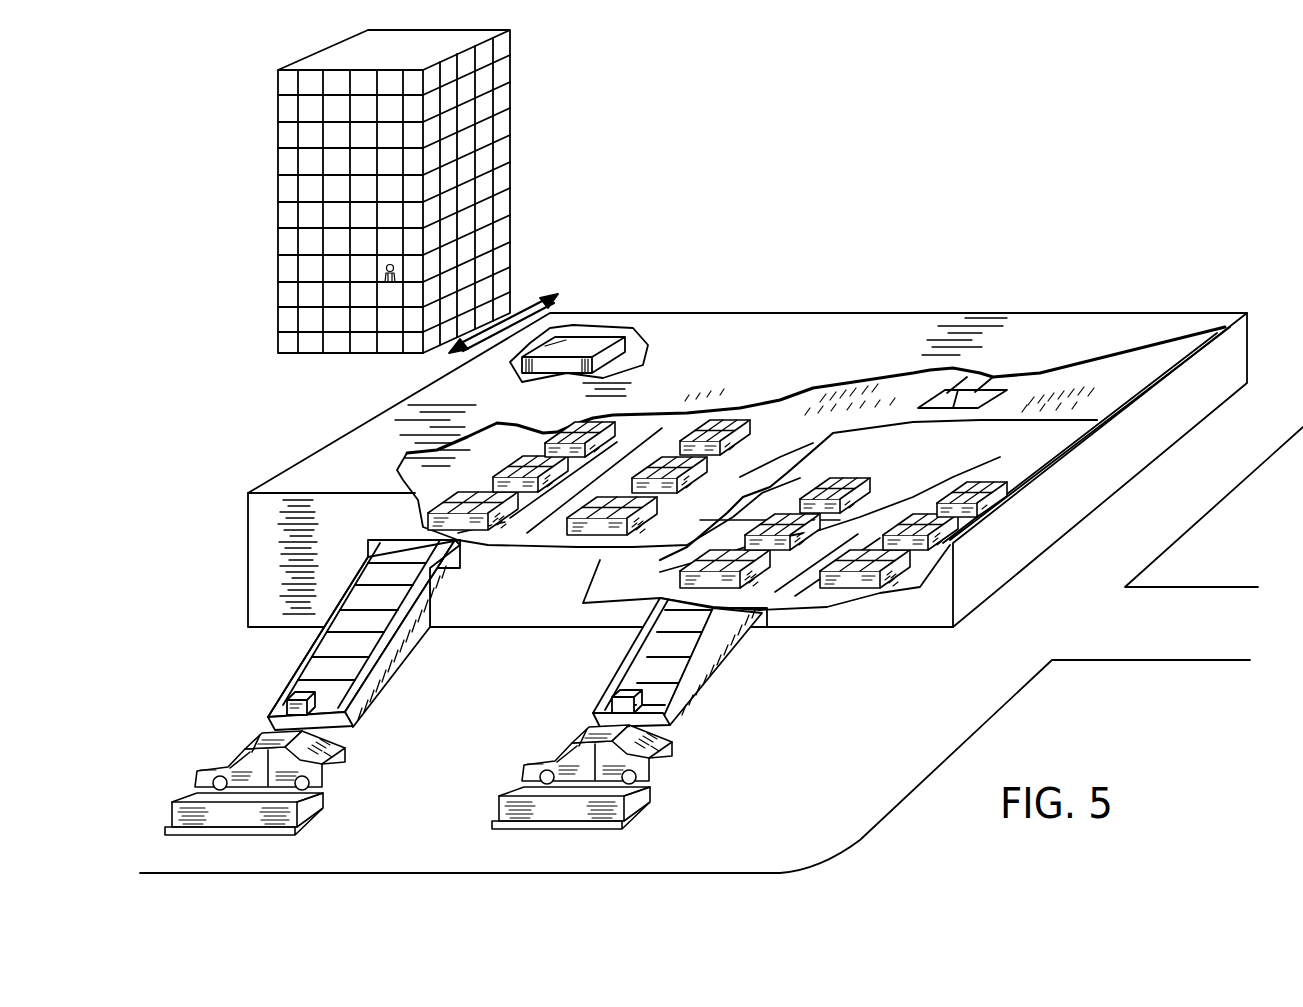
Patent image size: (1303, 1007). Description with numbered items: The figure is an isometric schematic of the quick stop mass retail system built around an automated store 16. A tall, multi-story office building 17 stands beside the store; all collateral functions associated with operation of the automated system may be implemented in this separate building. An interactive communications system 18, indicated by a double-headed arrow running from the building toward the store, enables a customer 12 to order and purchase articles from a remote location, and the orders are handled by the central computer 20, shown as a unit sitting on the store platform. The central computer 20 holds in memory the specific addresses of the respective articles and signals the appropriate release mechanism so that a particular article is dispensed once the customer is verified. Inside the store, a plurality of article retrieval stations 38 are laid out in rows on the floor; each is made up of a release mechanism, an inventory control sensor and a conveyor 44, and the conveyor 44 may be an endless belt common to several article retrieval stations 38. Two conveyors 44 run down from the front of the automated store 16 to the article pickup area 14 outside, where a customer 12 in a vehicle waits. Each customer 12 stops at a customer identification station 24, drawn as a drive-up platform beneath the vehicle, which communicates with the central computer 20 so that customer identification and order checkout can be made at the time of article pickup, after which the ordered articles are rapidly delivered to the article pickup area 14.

The customer 12 is at (418, 757).
The article pickup area 14 is at (407, 740).
The automated store 16 is at (1225, 312).
The office building 17 is at (500, 147).
The interactive communications system 18 is at (805, 294).
The central computer 20 is at (625, 338).
The customer identification station 24 is at (298, 813).
The article retrieval station 38 is at (480, 490).
The conveyor 44 is at (322, 670).